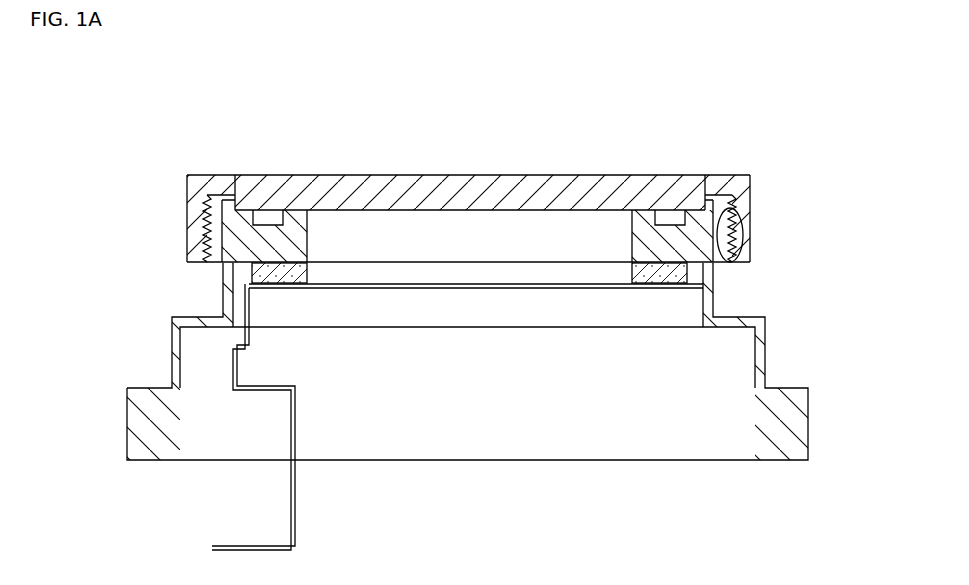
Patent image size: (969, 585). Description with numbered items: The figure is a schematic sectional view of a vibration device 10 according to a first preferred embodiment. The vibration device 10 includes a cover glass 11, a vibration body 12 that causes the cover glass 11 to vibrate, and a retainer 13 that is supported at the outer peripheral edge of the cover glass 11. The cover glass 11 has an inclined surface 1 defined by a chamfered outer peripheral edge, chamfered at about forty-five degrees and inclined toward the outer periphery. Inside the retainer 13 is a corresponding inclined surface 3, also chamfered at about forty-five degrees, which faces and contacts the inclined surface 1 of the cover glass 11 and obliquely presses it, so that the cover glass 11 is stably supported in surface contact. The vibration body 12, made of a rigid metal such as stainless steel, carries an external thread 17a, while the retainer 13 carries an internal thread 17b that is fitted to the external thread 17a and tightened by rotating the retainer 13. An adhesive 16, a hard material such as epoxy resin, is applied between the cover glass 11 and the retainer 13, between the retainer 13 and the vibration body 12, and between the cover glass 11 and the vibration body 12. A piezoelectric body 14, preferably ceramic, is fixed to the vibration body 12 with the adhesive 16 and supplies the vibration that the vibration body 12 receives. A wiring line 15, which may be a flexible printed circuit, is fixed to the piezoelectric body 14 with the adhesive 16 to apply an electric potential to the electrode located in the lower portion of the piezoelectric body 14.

The vibration device 10 is at (449, 80).
The inclined surface 1 is at (233, 180).
The inclined surface 3 is at (250, 189).
The cover glass 11 is at (321, 176).
The vibration body 12 is at (774, 334).
The retainer 13 is at (760, 212).
The piezoelectric body 14 is at (256, 273).
The wiring line 15 is at (226, 360).
The adhesive 16 is at (736, 213).
The external thread 17a is at (198, 221).
The internal thread 17b is at (219, 254).